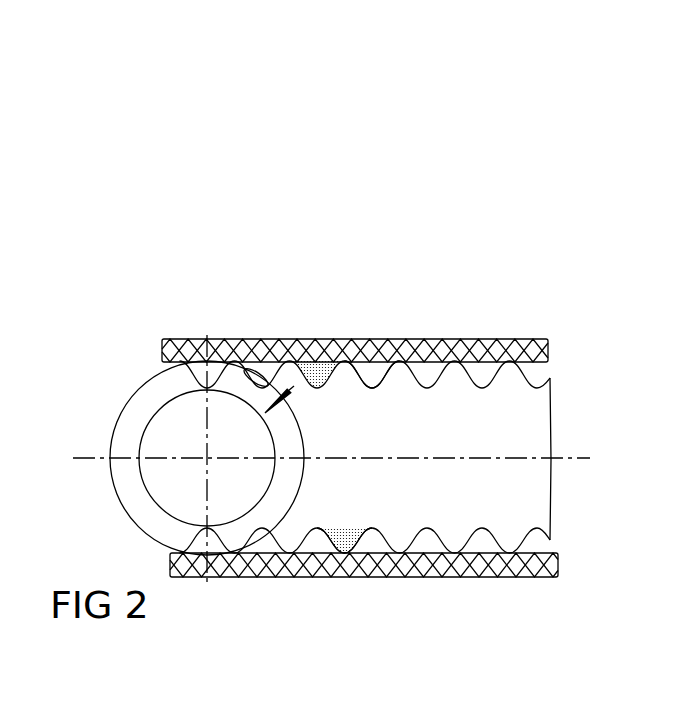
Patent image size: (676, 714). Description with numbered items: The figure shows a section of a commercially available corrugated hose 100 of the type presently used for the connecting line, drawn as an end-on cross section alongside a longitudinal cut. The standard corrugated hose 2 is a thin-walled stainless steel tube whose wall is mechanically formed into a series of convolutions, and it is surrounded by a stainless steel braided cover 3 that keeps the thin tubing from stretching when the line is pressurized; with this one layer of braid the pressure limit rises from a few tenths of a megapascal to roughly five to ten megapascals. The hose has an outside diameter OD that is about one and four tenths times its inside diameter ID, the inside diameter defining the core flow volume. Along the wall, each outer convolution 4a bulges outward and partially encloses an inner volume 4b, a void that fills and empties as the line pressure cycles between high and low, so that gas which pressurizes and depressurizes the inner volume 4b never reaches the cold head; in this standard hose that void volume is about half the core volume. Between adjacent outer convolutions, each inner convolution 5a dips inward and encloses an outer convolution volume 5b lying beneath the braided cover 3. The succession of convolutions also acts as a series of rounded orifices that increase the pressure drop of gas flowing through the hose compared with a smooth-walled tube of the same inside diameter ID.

The corrugated hose 100 is at (368, 446).
The standard corrugated hose 2 is at (372, 388).
The braided cover 3 is at (220, 578).
The outer convolution 4a is at (342, 550).
The inner volume 4b is at (344, 554).
The inner convolution 5a is at (373, 388).
The outer convolution volume 5b is at (312, 366).
The outside diameter OD is at (135, 402).
The inside diameter ID is at (153, 500).